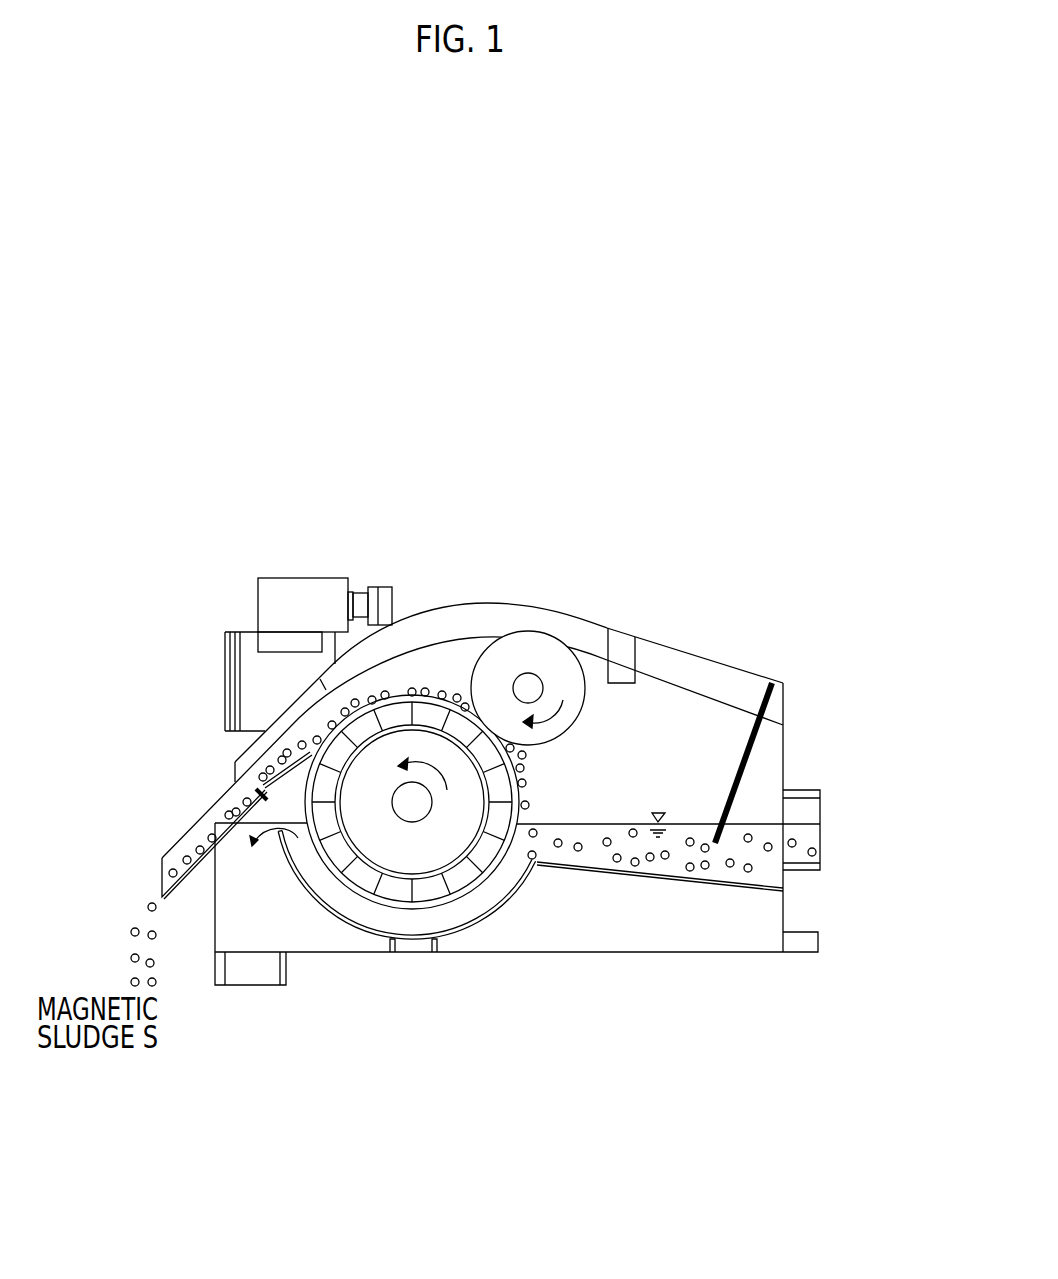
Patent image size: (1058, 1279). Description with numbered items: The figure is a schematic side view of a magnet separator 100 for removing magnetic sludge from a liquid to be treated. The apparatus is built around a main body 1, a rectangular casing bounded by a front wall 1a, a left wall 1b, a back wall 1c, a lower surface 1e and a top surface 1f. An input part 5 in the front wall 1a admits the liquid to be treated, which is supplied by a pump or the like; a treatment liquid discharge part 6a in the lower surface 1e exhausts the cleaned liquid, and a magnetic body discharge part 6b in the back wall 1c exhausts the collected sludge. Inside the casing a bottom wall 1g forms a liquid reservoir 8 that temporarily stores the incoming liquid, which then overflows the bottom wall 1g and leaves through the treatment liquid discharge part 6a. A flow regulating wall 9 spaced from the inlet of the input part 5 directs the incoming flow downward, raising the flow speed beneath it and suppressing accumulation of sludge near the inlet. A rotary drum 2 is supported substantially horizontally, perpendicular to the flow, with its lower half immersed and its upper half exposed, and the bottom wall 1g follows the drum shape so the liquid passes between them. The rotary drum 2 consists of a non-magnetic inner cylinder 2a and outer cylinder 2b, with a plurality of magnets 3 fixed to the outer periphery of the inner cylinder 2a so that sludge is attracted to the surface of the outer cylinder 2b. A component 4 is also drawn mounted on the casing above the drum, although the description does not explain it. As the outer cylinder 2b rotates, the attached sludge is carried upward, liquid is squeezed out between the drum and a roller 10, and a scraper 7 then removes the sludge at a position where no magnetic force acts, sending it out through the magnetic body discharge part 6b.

The magnet separator 100 is at (640, 363).
The main body 1 is at (683, 647).
The front wall 1a is at (787, 900).
The left wall 1b is at (748, 938).
The back wall 1c is at (212, 938).
The lower surface 1e is at (537, 960).
The top surface 1f is at (747, 667).
The bottom wall 1g is at (366, 936).
The rotary drum 2 is at (427, 750).
The inner cylinder 2a is at (492, 866).
The outer cylinder 2b is at (520, 790).
The magnets 3 is at (447, 898).
The drive motor 4 is at (283, 602).
The input part 5 is at (822, 808).
The treatment liquid discharge part 6a is at (262, 997).
The magnetic body discharge part 6b is at (180, 806).
The scraper 7 is at (312, 750).
The liquid reservoir 8 is at (675, 863).
The flow regulating wall 9 is at (753, 767).
The roller 10 is at (550, 657).